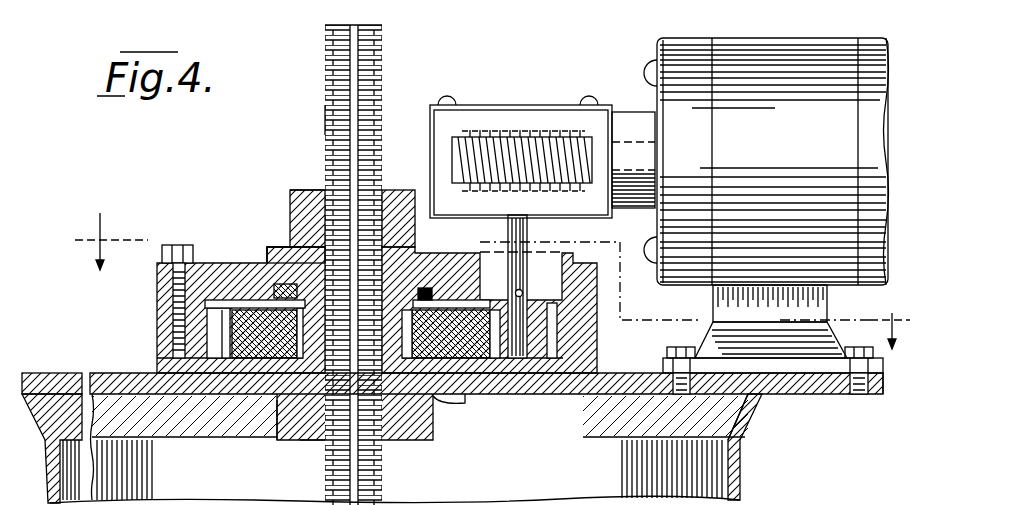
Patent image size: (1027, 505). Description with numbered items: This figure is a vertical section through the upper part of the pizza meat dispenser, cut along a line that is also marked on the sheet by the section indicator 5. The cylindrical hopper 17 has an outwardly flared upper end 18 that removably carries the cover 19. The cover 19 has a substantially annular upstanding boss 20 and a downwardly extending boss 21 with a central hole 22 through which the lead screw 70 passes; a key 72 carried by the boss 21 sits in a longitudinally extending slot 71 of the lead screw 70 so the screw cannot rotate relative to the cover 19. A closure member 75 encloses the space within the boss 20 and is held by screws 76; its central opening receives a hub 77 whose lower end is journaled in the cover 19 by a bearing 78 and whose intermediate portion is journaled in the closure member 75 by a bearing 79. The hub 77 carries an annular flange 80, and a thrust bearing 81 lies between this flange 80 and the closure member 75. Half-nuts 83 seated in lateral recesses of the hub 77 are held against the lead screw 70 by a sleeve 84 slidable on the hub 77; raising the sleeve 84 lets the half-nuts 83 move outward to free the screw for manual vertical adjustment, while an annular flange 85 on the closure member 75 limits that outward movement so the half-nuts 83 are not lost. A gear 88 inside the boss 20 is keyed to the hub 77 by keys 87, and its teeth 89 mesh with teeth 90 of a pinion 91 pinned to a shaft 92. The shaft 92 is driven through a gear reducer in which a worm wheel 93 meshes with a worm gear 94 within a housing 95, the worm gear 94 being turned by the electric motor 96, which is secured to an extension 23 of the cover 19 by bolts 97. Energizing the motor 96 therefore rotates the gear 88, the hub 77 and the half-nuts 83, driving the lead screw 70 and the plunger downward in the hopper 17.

The section line 5- 5 is at (492, 272).
The hopper 17 is at (740, 474).
The flared upper end 18 is at (753, 420).
The cover 19 is at (53, 374).
The upstanding boss 20 is at (157, 329).
The downwardly extending boss 21 is at (277, 443).
The central hole 22 is at (313, 442).
The extension 23 is at (823, 395).
The lead screw 70 is at (325, 118).
The longitudinally extending slot 71 is at (355, 78).
The key 72 is at (432, 417).
The closure member 75 is at (200, 244).
The screws 76 is at (175, 245).
The hub 77 is at (292, 230).
The bearing 78 is at (462, 396).
The bearing 79 is at (270, 263).
The annular flange 80 is at (661, 275).
The thrust bearing 81 is at (425, 292).
The half-nuts 83 is at (308, 188).
The sleeve 84 is at (287, 188).
The annular flange 85 is at (280, 283).
The keys 87 is at (308, 378).
The gear 88 is at (250, 352).
The teeth 89 is at (222, 347).
The teeth 90 is at (558, 375).
The pinion 91 is at (548, 359).
The shaft 92 is at (518, 359).
The worm wheel 93 is at (510, 138).
The worm gear 94 is at (484, 138).
The housing 95 is at (562, 116).
The electric motor 96 is at (675, 52).
The bolts 97 is at (687, 347).